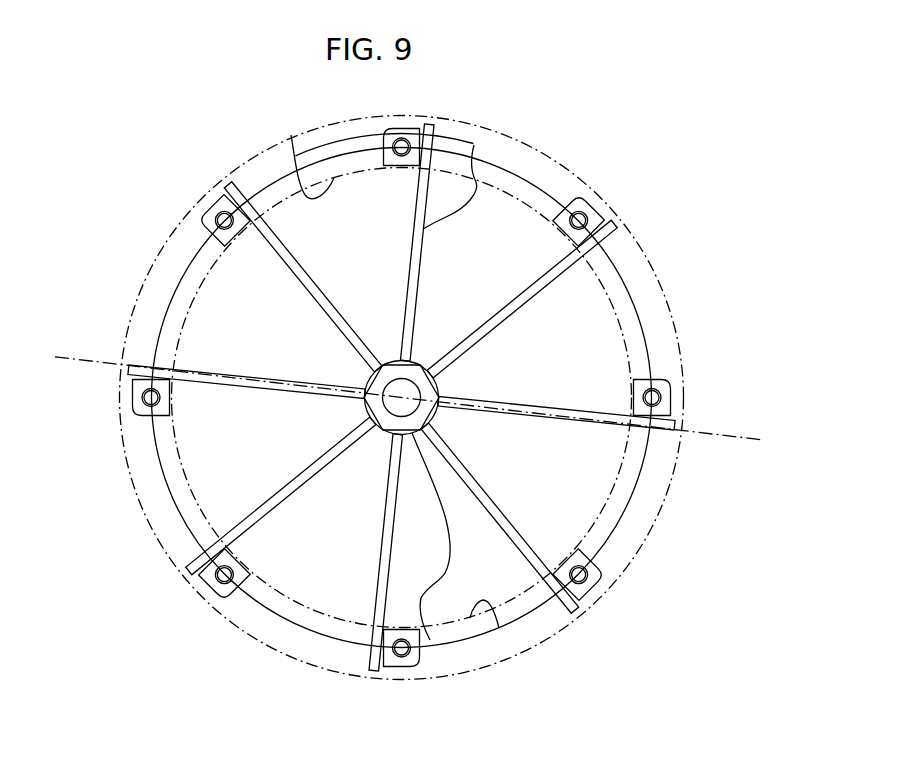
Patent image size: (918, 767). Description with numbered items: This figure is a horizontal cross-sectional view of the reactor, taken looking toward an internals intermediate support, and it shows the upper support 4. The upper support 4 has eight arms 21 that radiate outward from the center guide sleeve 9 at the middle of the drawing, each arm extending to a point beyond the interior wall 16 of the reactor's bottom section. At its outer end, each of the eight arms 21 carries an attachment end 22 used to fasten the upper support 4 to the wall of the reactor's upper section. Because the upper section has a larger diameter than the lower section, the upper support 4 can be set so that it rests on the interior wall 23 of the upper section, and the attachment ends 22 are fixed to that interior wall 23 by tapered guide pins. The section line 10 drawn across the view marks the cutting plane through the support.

The upper support 4 is at (586, 116).
The center guide sleeve 9 is at (430, 640).
The section line 10 is at (406, 400).
The interior wall of the bottom section 16 is at (291, 135).
The arms 21 is at (474, 145).
The attachment end 22 is at (672, 380).
The interior wall of the upper section 23 is at (648, 296).